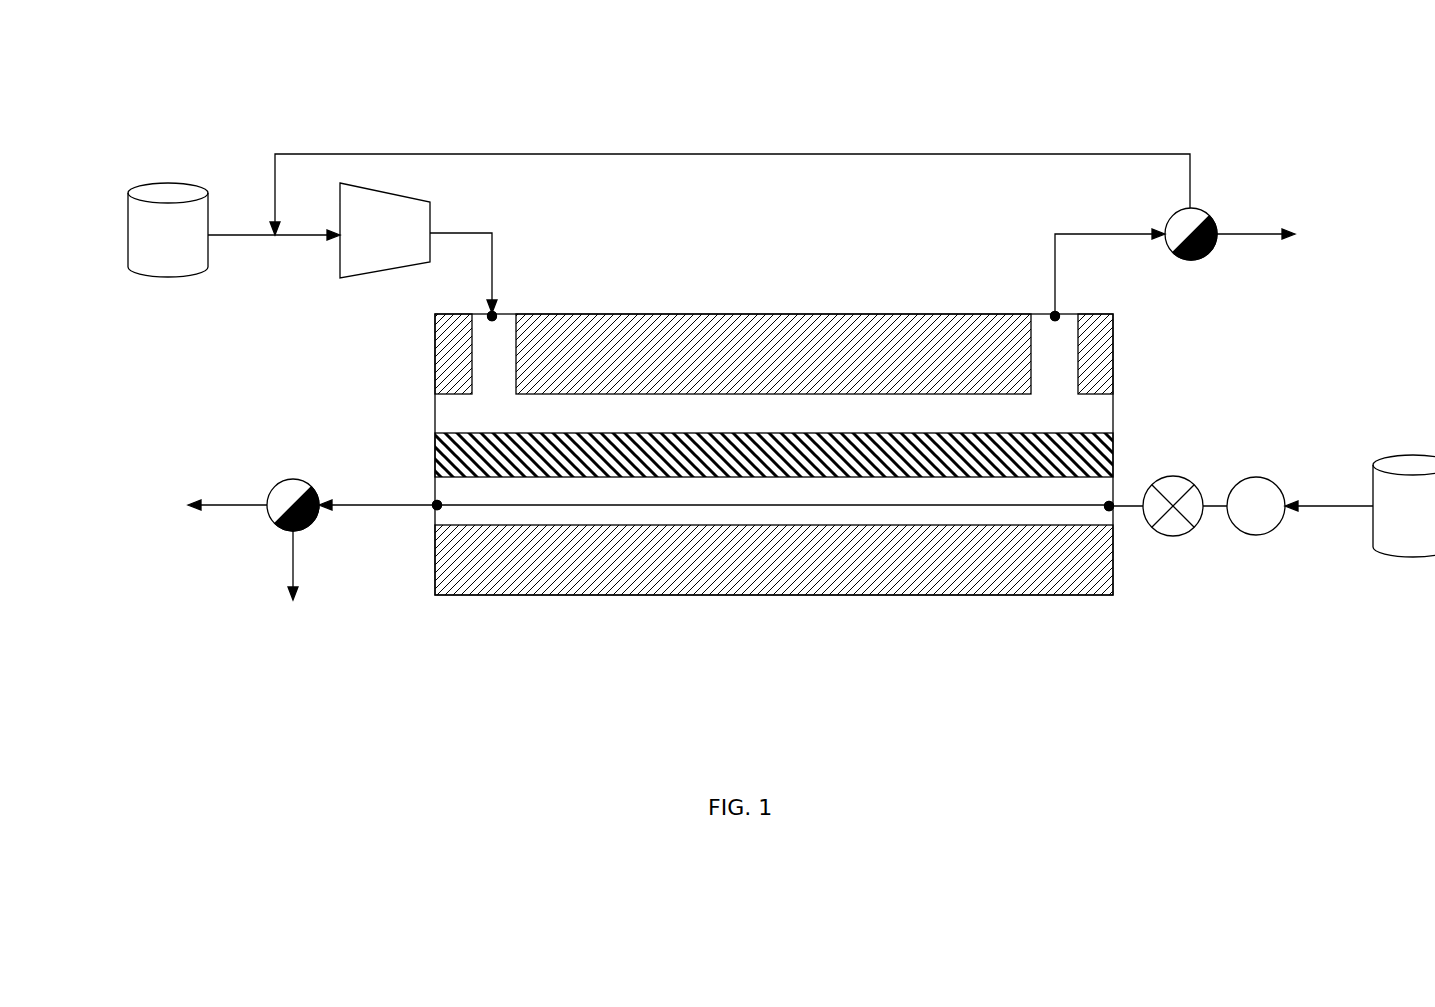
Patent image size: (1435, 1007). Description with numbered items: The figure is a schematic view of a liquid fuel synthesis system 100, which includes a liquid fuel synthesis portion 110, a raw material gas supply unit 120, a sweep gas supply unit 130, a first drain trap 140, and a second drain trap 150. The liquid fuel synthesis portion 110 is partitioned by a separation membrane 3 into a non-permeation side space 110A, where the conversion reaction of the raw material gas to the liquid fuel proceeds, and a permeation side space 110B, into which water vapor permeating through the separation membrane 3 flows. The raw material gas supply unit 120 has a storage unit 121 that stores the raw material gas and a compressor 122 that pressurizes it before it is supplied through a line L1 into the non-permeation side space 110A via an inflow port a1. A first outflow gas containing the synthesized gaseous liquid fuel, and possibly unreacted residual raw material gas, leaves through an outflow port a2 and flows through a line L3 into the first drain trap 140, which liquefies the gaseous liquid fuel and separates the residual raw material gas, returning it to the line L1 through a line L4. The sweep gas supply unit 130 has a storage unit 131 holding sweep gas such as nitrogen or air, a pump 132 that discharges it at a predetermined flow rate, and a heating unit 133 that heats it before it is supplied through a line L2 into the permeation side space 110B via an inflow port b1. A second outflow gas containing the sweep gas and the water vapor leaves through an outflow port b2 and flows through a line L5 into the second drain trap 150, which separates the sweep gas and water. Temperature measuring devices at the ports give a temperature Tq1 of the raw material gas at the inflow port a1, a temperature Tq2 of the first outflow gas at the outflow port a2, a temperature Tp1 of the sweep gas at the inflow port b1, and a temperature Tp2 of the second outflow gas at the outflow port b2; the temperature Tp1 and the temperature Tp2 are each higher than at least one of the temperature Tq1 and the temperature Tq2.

The liquid fuel synthesis system 100 is at (1318, 168).
The liquid fuel synthesis portion 110 is at (774, 476).
The non-permeation side space 110A is at (817, 428).
The permeation side space 110B is at (817, 500).
The separation membrane 3 is at (885, 433).
The raw material gas supply unit 120 is at (279, 308).
The storage unit 121 is at (165, 277).
The compressor 122 is at (357, 278).
The sweep gas supply unit 130 is at (1289, 583).
The storage unit 131 is at (1397, 557).
The pump 132 is at (1256, 535).
The heating unit 133 is at (1194, 560).
The first drain trap 140 is at (1207, 214).
The second drain trap 150 is at (288, 481).
The line L1 is at (456, 233).
The line L2 is at (1126, 500).
The line L3 is at (1074, 234).
The line L4 is at (1010, 154).
The line L5 is at (370, 505).
The inflow port a1 is at (484, 313).
The outflow port a2 is at (1045, 315).
The inflow port b1 is at (1114, 517).
The outflow port b2 is at (435, 516).
The temperature of the raw material gas Tq1 is at (494, 315).
The temperature of the first outflow gas Tq2 is at (1058, 315).
The temperature of the sweep gas Tp1 is at (1111, 503).
The temperature of the second outflow gas Tp2 is at (433, 497).